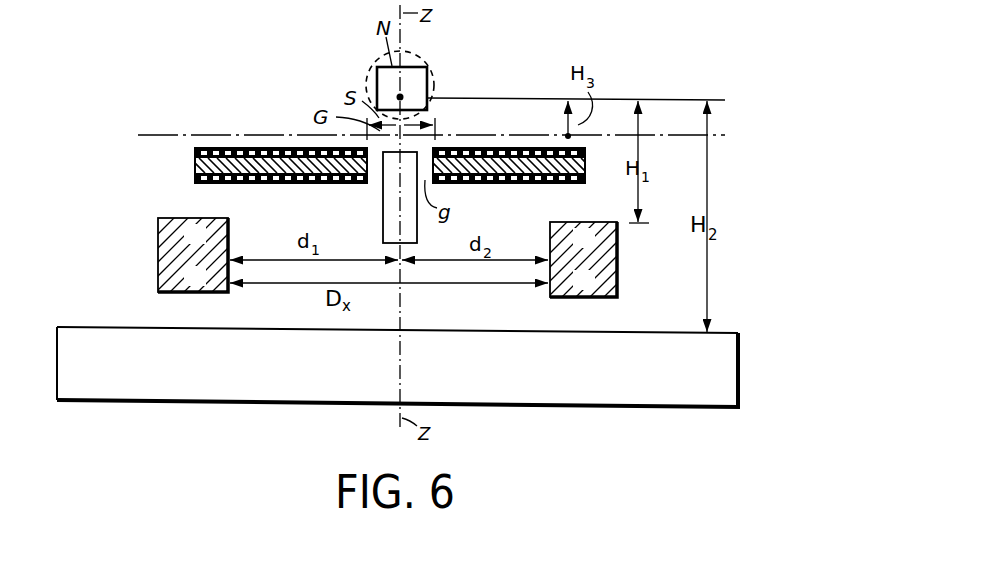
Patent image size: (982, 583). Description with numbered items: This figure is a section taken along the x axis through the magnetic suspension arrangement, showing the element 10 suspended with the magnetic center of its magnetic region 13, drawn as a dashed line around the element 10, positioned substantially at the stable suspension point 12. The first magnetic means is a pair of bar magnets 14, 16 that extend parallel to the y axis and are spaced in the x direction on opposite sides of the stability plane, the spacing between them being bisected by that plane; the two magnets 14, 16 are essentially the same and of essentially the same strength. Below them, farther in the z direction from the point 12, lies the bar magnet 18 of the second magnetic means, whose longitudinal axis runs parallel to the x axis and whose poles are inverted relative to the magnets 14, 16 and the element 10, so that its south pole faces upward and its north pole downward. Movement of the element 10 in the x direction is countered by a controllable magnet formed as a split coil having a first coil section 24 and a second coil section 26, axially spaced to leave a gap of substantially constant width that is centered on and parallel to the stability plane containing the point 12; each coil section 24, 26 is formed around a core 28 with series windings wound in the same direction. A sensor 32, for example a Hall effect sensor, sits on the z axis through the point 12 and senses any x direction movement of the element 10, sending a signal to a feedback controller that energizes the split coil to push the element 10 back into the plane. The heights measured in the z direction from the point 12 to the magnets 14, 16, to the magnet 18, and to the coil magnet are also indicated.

The element 10 is at (388, 67).
The stable suspension point 12 is at (403, 96).
The magnetic region 13 is at (426, 60).
The bar magnet 14 is at (158, 258).
The bar magnet 16 is at (619, 270).
The bar magnet 18 is at (739, 368).
The first coil section 24 is at (195, 170).
The second coil section 26 is at (522, 183).
The core 28 is at (309, 183).
The sensor 32 is at (385, 212).